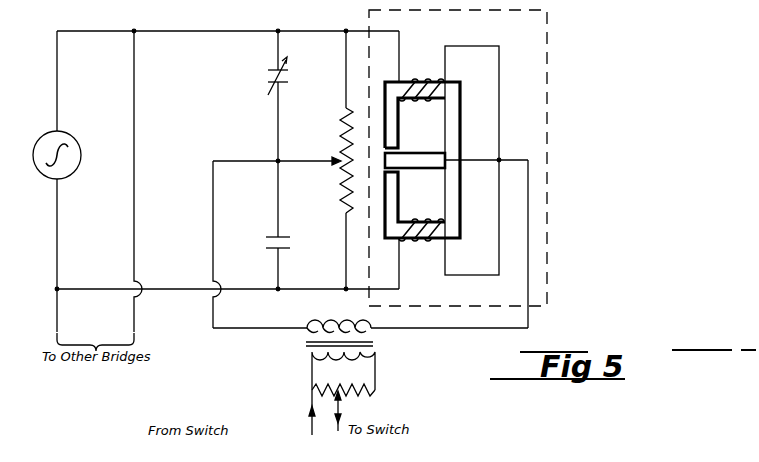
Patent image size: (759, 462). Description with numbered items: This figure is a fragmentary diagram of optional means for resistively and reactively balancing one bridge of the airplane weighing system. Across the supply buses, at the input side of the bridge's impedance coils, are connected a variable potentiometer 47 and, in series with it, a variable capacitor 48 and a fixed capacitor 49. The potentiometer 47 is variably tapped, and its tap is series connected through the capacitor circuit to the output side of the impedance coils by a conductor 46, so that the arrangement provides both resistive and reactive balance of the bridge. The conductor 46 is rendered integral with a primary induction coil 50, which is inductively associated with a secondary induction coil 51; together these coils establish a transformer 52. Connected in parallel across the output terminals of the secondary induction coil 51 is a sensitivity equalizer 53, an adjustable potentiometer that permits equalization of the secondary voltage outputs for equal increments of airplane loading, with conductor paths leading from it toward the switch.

The conductor 46 is at (328, 160).
The variable potentiometer 47 is at (345, 200).
The variable capacitor 48 is at (270, 68).
The fixed capacitor 49 is at (272, 237).
The primary induction coil 50 is at (320, 320).
The secondary induction coil 51 is at (347, 376).
The transformer 52 is at (302, 350).
The sensitivity equalizer 53 is at (361, 401).